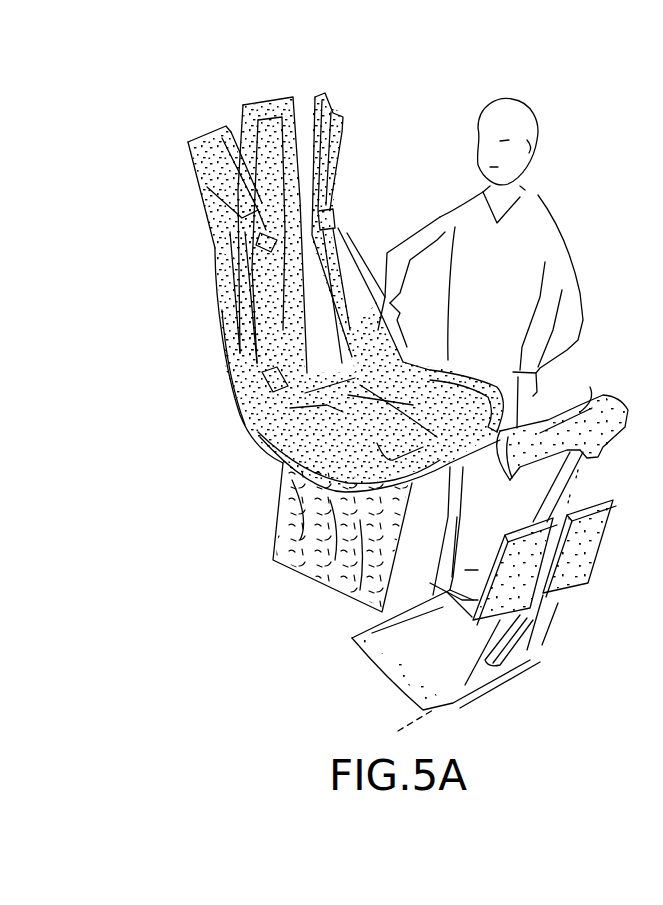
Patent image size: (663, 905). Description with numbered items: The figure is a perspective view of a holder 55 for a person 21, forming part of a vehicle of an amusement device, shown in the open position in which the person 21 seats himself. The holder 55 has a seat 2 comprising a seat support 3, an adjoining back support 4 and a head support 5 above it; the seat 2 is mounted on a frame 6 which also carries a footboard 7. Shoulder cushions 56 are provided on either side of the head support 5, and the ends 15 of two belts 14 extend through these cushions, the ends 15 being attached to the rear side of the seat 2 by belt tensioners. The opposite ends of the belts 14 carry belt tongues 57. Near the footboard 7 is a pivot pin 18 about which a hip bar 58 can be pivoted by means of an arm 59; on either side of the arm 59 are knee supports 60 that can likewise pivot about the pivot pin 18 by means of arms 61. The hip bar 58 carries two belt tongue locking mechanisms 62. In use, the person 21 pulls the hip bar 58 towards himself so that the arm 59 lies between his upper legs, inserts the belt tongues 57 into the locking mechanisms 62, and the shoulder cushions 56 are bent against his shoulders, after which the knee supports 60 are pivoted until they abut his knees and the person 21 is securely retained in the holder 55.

The seat 2 is at (205, 338).
The seat support 3 is at (307, 455).
The back support 4 is at (266, 281).
The head support 5 is at (265, 102).
The frame 6 is at (330, 563).
The footboard 7 is at (367, 645).
The belts 14 is at (300, 198).
The end 15 is at (240, 160).
The pivot pin 18 is at (410, 722).
The person 21 is at (507, 287).
The holder 55 is at (213, 393).
The shoulder cushions 56 is at (336, 130).
The belt tongues 57 is at (334, 218).
The hip bar 58 is at (603, 453).
The arm 59 is at (568, 484).
The knee supports 60 is at (583, 540).
The arms 61 is at (475, 653).
The belt tongue locking mechanisms 62 is at (550, 413).